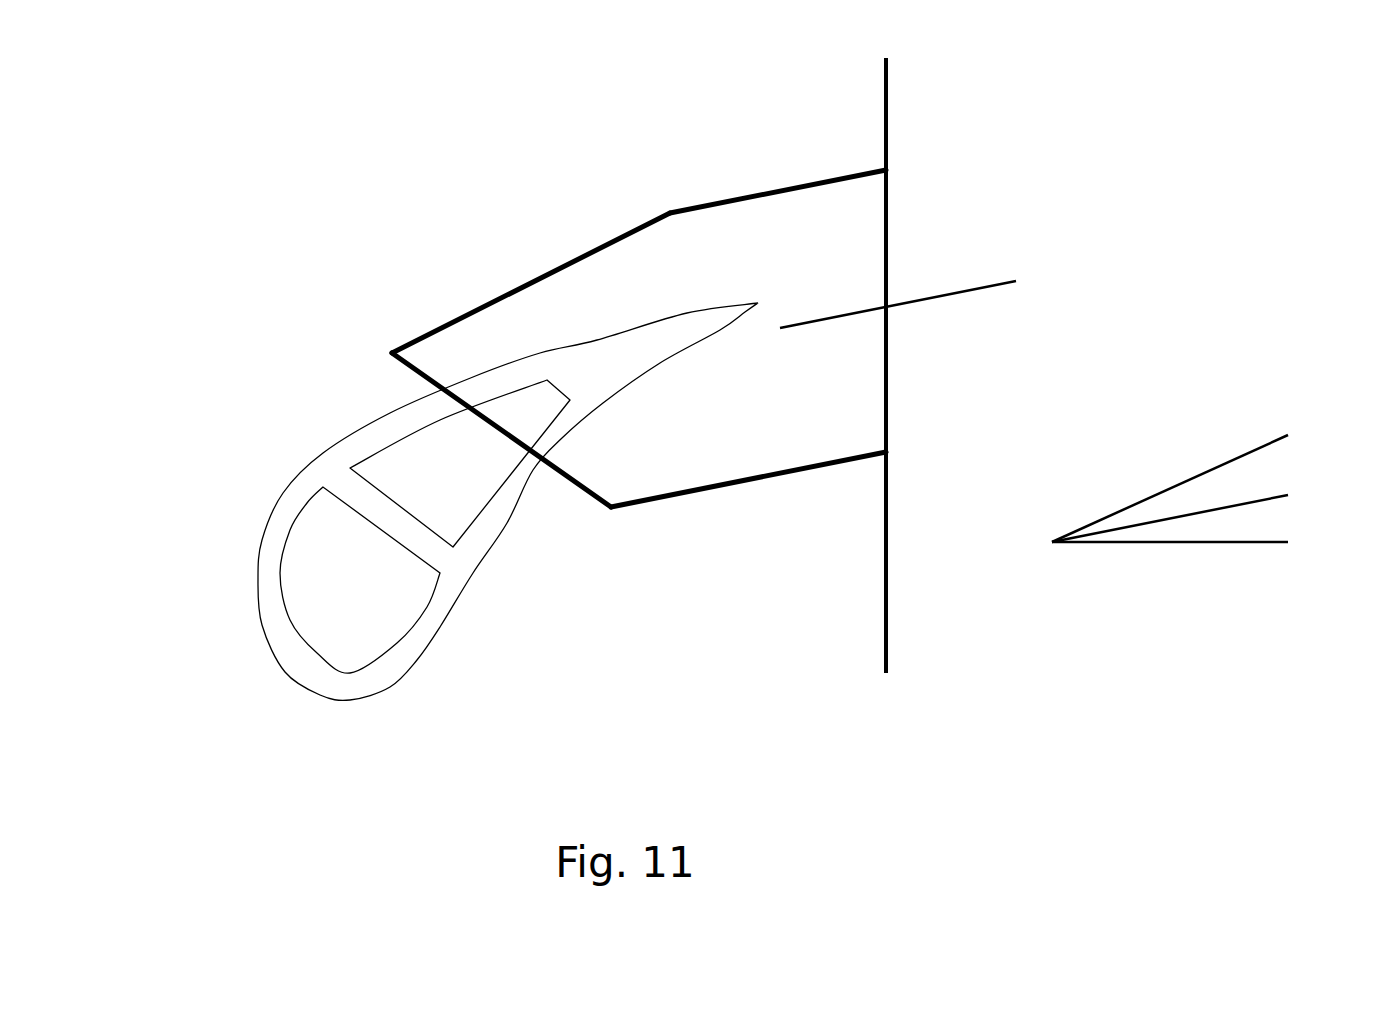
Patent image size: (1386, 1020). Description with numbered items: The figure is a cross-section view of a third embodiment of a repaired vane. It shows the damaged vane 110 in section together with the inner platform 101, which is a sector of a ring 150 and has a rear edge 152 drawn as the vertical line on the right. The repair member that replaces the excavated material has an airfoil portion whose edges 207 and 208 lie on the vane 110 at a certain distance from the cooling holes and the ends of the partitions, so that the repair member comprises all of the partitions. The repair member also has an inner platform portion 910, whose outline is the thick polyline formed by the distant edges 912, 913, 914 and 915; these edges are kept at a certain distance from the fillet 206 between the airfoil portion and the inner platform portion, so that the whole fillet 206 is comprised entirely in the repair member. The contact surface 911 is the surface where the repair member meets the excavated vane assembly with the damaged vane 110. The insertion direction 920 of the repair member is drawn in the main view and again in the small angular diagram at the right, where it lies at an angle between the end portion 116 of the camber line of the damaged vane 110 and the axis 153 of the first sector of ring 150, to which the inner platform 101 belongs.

The vane 110 is at (258, 673).
The fillet 206 is at (660, 365).
The edge of the airfoil portion 207 is at (440, 390).
The edge of the airfoil portion 208 is at (548, 462).
The inner platform portion 910 is at (847, 379).
The contact surface 911 is at (514, 430).
The distant edge 912 is at (531, 283).
The distant edge 913 is at (778, 173).
The distant edge 914 is at (864, 311).
The distant edge 915 is at (748, 462).
The insertion direction 920 is at (1076, 390).
The rear edge 152 is at (910, 365).
The axis 153 is at (1170, 567).
The end portion of a camber line 116 is at (1170, 470).
The inner platform 101 is at (573, 735).
The ring 150 is at (641, 735).